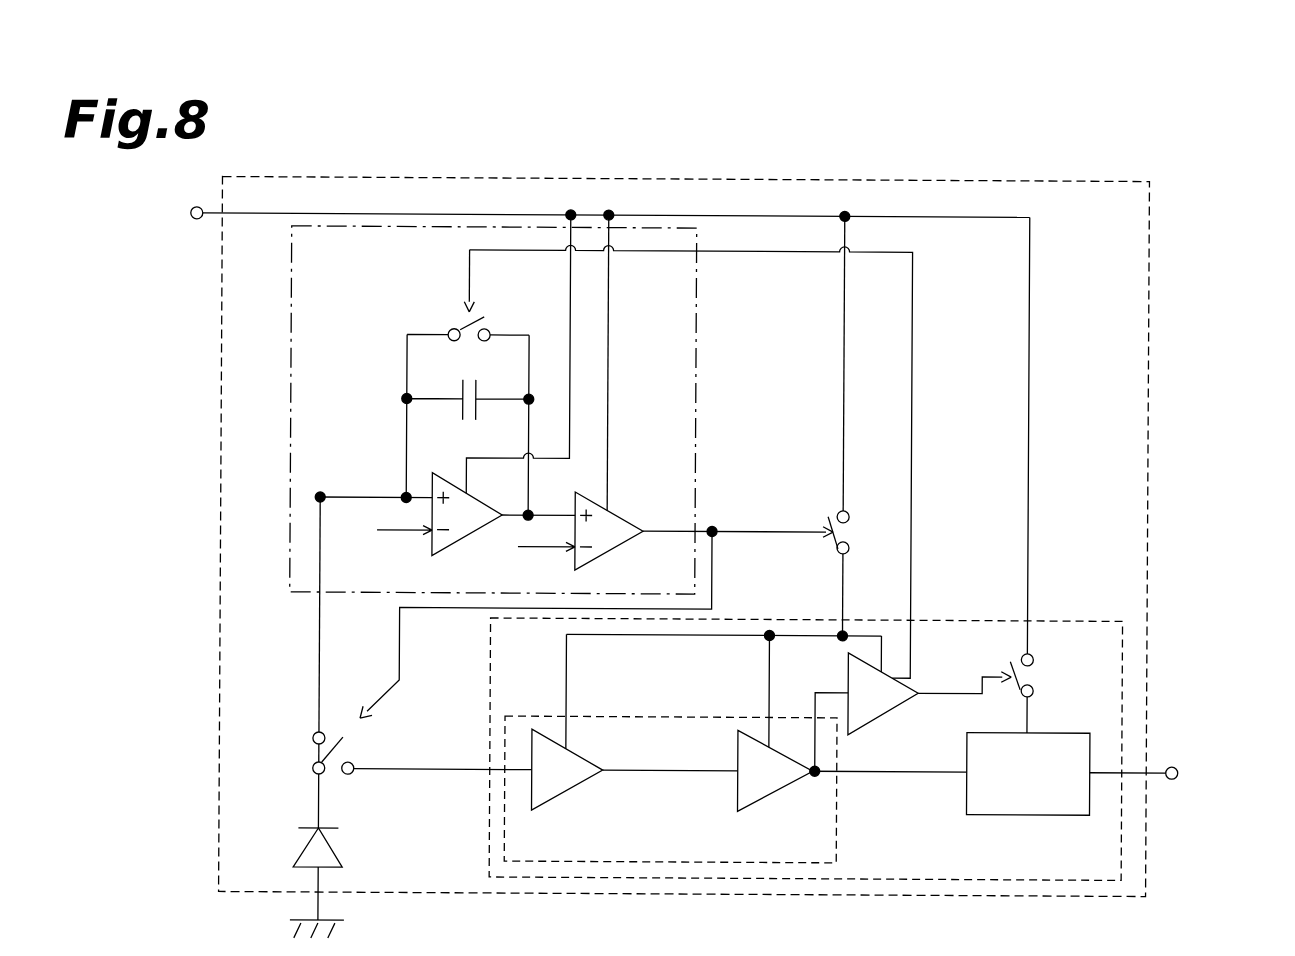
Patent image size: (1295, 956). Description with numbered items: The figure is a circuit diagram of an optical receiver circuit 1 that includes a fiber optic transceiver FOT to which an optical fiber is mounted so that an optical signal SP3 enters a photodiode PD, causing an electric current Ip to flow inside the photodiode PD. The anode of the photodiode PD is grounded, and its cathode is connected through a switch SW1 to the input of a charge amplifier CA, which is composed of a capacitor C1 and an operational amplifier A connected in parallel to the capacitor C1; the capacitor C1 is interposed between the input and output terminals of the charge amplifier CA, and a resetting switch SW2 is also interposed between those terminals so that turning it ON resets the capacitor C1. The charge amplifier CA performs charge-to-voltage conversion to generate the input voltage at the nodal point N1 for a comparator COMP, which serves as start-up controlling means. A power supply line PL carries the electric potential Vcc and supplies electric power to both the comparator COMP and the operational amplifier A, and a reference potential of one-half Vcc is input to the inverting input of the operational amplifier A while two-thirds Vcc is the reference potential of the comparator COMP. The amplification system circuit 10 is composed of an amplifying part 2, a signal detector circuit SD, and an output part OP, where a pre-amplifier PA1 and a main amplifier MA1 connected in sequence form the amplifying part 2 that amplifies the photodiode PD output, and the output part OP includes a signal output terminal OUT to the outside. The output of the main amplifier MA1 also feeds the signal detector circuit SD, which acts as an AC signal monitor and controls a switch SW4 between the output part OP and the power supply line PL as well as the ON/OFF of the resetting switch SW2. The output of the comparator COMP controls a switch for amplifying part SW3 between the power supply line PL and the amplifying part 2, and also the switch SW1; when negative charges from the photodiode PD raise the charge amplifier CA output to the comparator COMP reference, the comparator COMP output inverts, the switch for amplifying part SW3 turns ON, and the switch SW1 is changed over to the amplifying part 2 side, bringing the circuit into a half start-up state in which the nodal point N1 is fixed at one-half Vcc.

The optical receiver circuit 1 is at (1110, 128).
The amplification system circuit 10 is at (1083, 618).
The amplifying part 2 is at (839, 834).
The fiber optic transceiver FOT is at (1148, 872).
The power source electric potential Vcc is at (189, 216).
The power supply line PL is at (981, 216).
The charge amplifier CA is at (383, 418).
The switch SW1 is at (323, 760).
The resetting switch SW2 is at (457, 316).
The switch for amplifying part SW3 is at (820, 539).
The switch SW4 is at (1022, 676).
The capacitor C1 is at (459, 394).
The operational amplifier A is at (447, 474).
The nodal point N1 is at (531, 511).
The comparator COMP is at (633, 522).
The electric current Ip is at (304, 660).
The optical signal SP3 is at (279, 859).
The photodiode PD is at (335, 845).
The pre-amplifier PA1 is at (573, 791).
The main amplifier MA1 is at (776, 790).
The signal detector circuit SD is at (871, 719).
The output part OP is at (1061, 813).
The signal output terminal OUT is at (1179, 771).